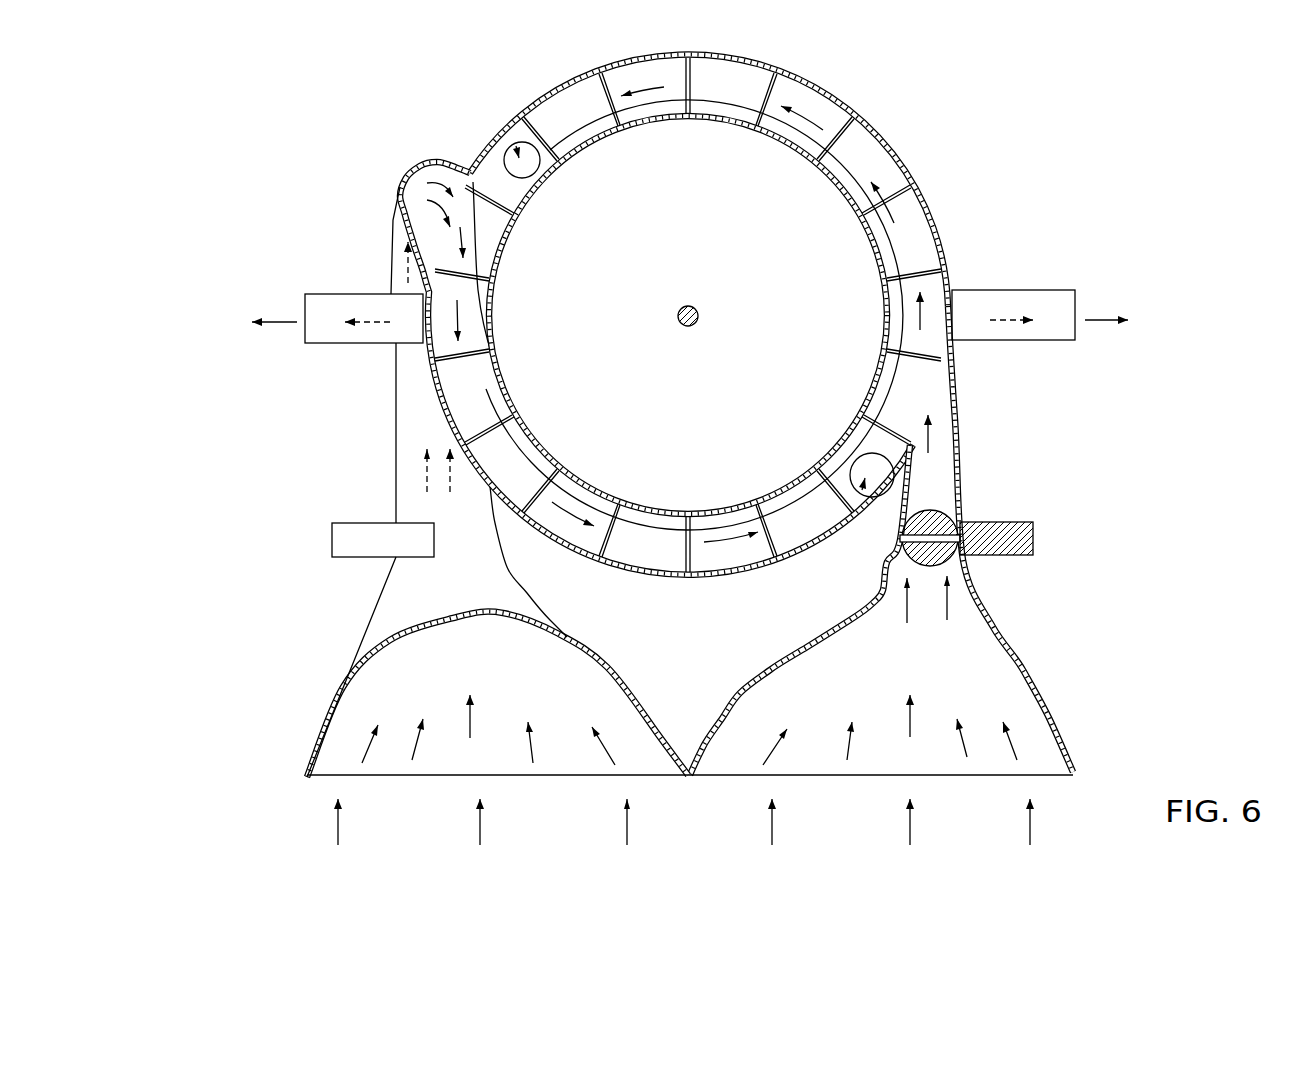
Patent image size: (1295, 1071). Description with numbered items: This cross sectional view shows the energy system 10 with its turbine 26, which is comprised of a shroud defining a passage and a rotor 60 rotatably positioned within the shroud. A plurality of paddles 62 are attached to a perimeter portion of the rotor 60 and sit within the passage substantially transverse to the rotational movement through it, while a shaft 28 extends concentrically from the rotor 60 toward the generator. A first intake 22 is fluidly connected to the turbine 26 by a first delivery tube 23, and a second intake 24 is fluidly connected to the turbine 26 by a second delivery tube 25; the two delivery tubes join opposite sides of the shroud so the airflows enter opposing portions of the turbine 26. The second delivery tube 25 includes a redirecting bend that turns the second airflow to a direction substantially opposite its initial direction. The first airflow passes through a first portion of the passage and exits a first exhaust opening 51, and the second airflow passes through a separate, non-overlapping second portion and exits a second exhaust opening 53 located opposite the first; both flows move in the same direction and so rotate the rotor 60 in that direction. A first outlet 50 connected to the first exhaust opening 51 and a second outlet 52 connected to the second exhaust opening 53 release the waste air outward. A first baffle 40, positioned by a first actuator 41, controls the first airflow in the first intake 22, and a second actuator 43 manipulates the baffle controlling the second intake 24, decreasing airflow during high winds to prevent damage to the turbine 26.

The energy system 10 is at (245, 108).
The first intake 22 is at (880, 767).
The first delivery tube 23 is at (958, 478).
The second intake 24 is at (400, 768).
The second delivery tube 25 is at (392, 226).
The turbine 26 is at (547, 93).
The shaft 28 is at (695, 306).
The first baffle 40 is at (940, 512).
The first actuator 41 is at (1035, 540).
The second actuator 43 is at (332, 540).
The first outlet 50 is at (305, 300).
The first exhaust opening 51 is at (500, 157).
The second outlet 52 is at (1050, 290).
The second exhaust opening 53 is at (900, 450).
The rotor 60 is at (877, 188).
The paddles 62 is at (847, 140).